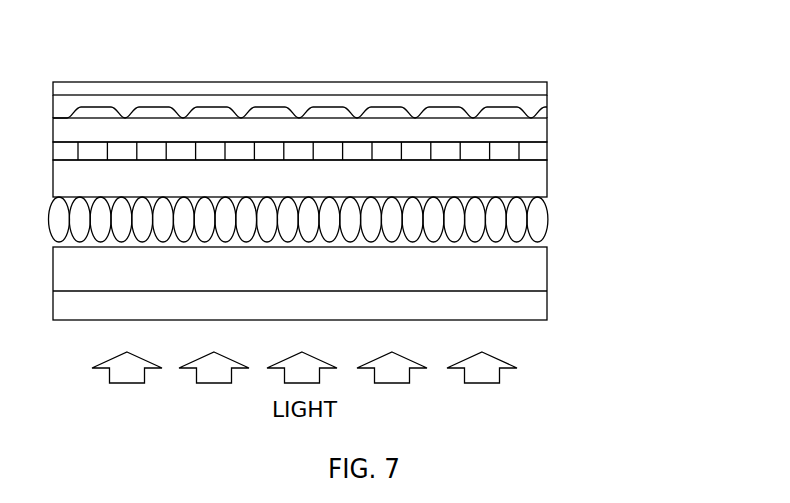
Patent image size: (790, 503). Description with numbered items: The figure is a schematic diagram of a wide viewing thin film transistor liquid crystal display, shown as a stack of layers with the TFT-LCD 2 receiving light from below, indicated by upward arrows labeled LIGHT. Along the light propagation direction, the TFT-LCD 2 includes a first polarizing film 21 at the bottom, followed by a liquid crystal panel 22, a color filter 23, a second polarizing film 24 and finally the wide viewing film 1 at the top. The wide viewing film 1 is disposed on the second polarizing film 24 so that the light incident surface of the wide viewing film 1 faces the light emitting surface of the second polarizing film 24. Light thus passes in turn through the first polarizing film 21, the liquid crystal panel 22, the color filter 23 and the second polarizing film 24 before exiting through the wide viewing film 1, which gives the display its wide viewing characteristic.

The TFT-LCD 2 is at (272, 48).
The wide viewing film 1 is at (547, 90).
The second polarizing film 24 is at (547, 128).
The color filter 23 is at (547, 150).
The liquid crystal panel 22 is at (547, 172).
The first polarizing film 21 is at (547, 305).